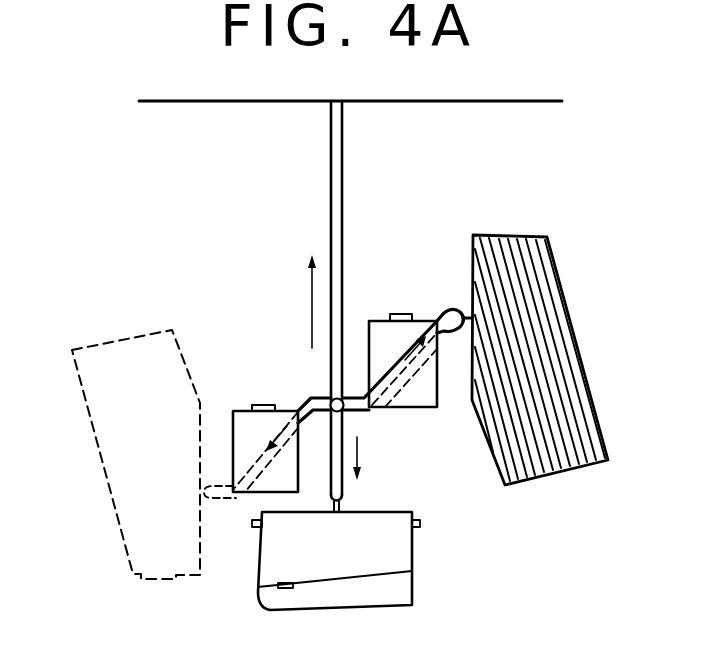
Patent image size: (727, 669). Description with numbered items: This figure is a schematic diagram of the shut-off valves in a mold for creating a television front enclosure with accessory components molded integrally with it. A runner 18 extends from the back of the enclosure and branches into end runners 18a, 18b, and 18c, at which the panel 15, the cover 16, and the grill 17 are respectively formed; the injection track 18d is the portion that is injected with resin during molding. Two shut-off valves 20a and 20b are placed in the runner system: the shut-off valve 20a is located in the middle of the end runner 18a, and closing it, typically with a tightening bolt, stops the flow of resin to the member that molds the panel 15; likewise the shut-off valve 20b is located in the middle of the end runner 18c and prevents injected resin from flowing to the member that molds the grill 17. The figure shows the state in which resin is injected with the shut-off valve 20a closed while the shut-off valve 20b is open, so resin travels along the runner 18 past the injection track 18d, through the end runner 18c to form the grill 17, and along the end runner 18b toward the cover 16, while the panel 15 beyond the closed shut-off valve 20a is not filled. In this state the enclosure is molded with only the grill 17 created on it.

The panel 15 is at (97, 430).
The cover 16 is at (412, 585).
The grill 17 is at (562, 298).
The runner 18 is at (344, 160).
The end runner 18a is at (310, 398).
The end runner 18b is at (343, 490).
The end runner 18c is at (362, 392).
The injection track 18d is at (326, 399).
The shut-off valve 20a is at (238, 410).
The shut-off valve 20b is at (398, 408).